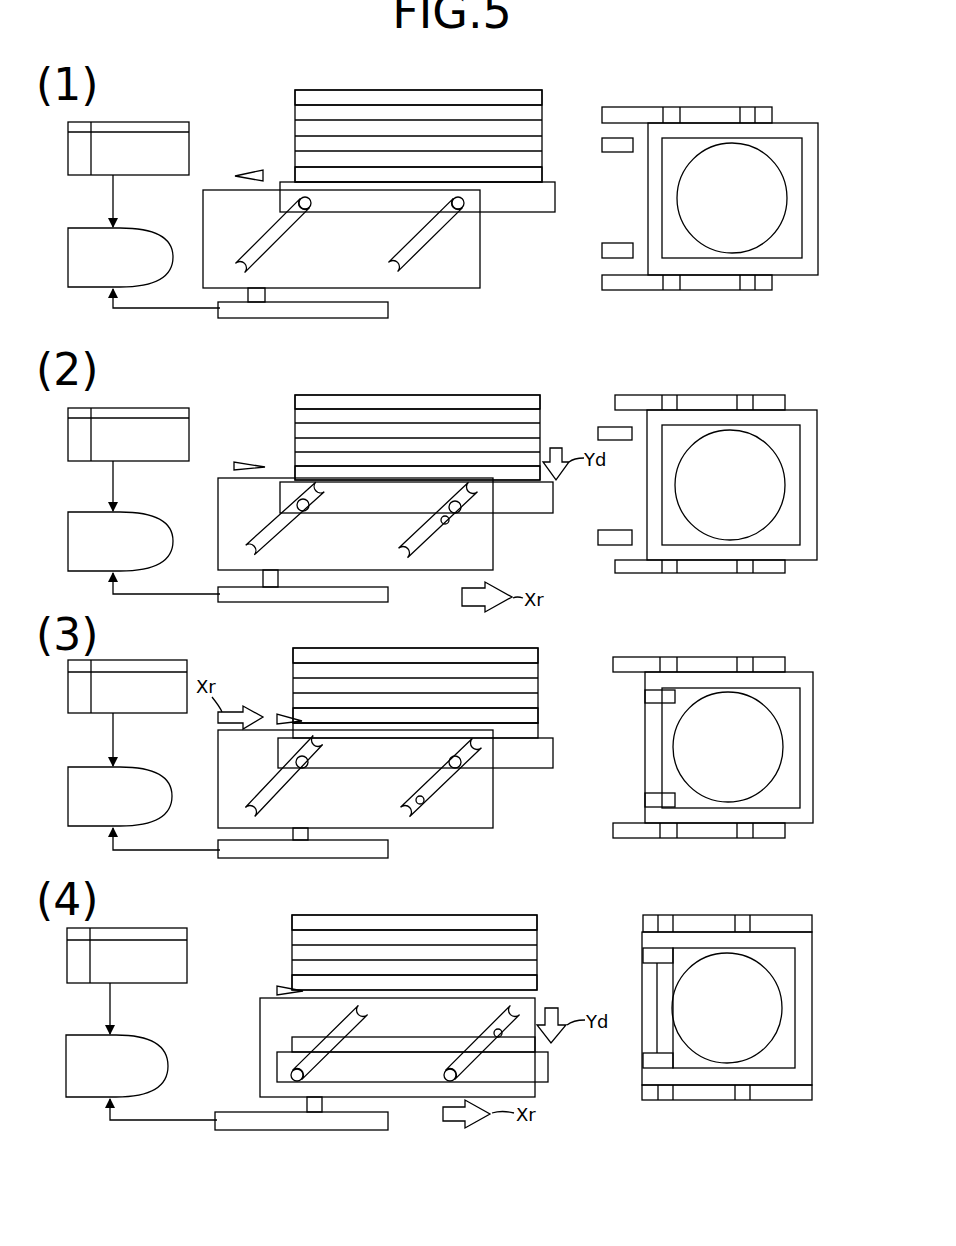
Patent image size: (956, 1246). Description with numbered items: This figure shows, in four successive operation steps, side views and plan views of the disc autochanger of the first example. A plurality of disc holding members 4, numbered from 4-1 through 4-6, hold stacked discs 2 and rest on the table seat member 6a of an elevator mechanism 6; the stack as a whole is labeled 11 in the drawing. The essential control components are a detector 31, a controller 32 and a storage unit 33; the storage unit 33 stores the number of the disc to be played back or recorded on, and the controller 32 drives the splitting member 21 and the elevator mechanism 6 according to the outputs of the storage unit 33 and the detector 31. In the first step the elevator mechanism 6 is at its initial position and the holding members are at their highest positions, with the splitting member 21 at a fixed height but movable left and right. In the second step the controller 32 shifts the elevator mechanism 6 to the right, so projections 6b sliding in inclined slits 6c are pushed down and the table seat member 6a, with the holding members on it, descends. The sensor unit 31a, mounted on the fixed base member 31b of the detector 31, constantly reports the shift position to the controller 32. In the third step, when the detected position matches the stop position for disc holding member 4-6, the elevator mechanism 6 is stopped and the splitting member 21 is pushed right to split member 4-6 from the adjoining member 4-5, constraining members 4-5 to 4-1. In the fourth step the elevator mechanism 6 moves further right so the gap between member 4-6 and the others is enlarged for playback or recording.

The disc 2 is at (827, 1000).
The disc holding member 4 is at (795, 160).
The disc holding member 4-1 is at (577, 968).
The disc holding member 4-5 is at (553, 986).
The disc holding member 4-6 is at (290, 1039).
The elevator mechanism 6 is at (815, 1093).
The table seat member 6a is at (567, 520).
The projection 6b is at (742, 1120).
The inclined slit 6c is at (562, 1060).
The tray stack / cassette 11 is at (285, 128).
The splitting member 21 is at (645, 1062).
The detector 31 is at (385, 1120).
The sensor unit 31a is at (305, 1107).
The fixed base member 31b is at (225, 1118).
The controller 32 is at (90, 289).
The storage unit 33 is at (165, 177).